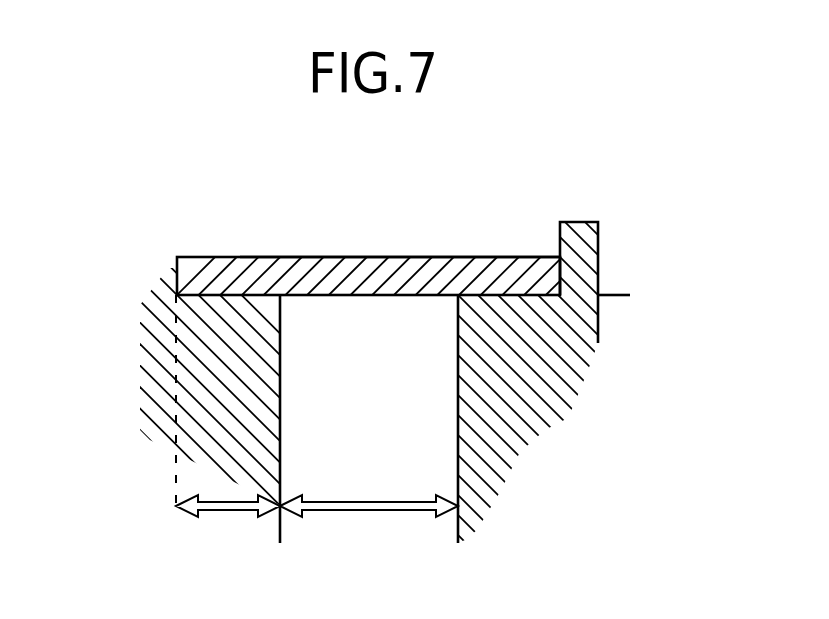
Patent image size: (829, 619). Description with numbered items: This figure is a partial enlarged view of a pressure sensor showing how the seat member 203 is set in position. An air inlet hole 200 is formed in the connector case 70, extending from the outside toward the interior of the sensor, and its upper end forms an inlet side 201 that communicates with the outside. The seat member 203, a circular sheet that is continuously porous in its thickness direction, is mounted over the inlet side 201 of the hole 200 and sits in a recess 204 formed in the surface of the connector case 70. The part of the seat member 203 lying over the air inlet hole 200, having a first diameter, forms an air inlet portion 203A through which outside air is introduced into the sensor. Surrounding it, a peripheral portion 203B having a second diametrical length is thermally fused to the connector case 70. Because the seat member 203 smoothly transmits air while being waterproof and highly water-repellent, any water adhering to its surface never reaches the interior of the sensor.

The connector case 70 is at (561, 386).
The air inlet hole 200 is at (358, 398).
The inlet side 201 is at (367, 305).
The seat member 203 is at (233, 257).
The air inlet portion 203A is at (370, 256).
The peripheral portion 203B is at (488, 255).
The recess 204 is at (547, 255).